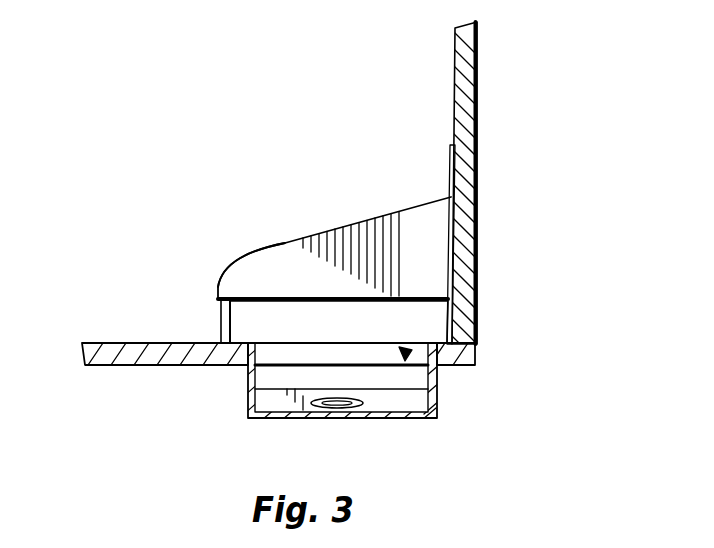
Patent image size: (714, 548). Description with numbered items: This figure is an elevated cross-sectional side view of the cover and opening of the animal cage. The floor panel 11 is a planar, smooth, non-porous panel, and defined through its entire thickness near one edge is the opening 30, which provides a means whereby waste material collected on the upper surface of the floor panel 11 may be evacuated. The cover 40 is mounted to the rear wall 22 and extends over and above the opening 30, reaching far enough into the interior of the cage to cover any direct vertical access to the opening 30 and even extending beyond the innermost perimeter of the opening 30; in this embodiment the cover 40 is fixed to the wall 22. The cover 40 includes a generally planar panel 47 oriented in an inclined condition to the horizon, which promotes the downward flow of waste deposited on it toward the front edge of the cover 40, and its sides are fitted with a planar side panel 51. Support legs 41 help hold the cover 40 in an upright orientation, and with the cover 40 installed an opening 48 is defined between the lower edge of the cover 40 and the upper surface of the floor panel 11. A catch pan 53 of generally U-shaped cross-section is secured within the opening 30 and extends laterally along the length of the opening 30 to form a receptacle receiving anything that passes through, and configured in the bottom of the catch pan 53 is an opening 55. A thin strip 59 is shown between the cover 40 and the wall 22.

The floor panel 11 is at (102, 343).
The rear wall 22 is at (477, 96).
The opening 30 is at (407, 352).
The cover 40 is at (400, 233).
The support legs 41 is at (222, 320).
The planar panel 47 is at (338, 222).
The opening 48 is at (322, 333).
The side panel 51 is at (262, 272).
The catch pan 53 is at (437, 402).
The opening 55 is at (348, 406).
The spacer strip 59 is at (450, 176).